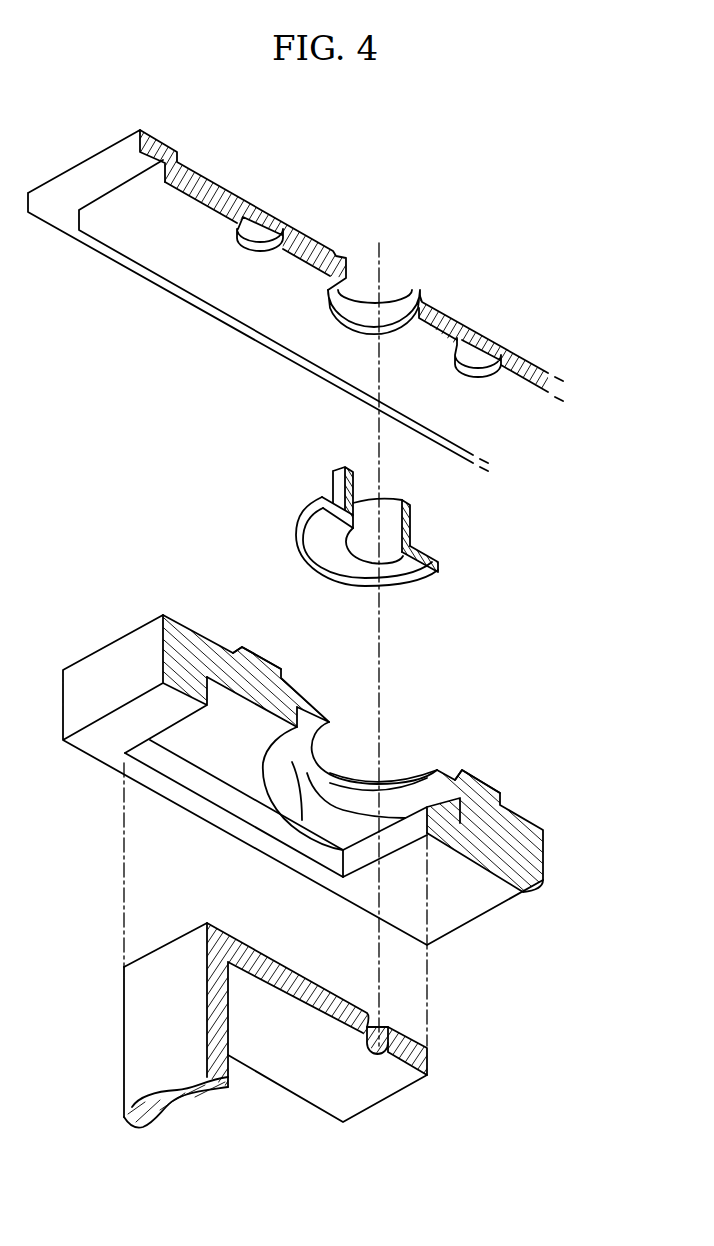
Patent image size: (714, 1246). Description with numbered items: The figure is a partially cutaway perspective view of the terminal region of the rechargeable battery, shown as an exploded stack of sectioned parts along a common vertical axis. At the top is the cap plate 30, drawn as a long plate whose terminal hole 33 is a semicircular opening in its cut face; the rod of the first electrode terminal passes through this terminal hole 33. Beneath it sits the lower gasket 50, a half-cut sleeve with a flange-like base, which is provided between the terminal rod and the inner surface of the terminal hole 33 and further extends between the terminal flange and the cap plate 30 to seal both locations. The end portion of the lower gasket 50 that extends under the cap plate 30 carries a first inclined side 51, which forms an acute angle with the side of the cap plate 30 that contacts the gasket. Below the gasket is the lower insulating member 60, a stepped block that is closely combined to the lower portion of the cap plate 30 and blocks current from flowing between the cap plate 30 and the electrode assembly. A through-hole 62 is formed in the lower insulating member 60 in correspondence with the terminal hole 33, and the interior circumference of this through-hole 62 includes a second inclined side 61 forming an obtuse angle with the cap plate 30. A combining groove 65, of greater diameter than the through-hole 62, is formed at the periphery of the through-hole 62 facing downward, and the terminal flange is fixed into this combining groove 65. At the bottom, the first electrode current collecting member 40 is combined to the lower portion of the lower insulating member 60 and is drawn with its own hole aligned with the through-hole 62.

The cap plate 30 is at (223, 197).
The terminal hole 33 is at (359, 288).
The first electrode current collecting member 40 is at (122, 1021).
The lower gasket 50 is at (424, 522).
The first inclined side 51 is at (438, 569).
The lower insulating member 60 is at (556, 849).
The second inclined side 61 is at (328, 711).
The through-hole 62 is at (356, 754).
The combining groove 65 is at (292, 762).